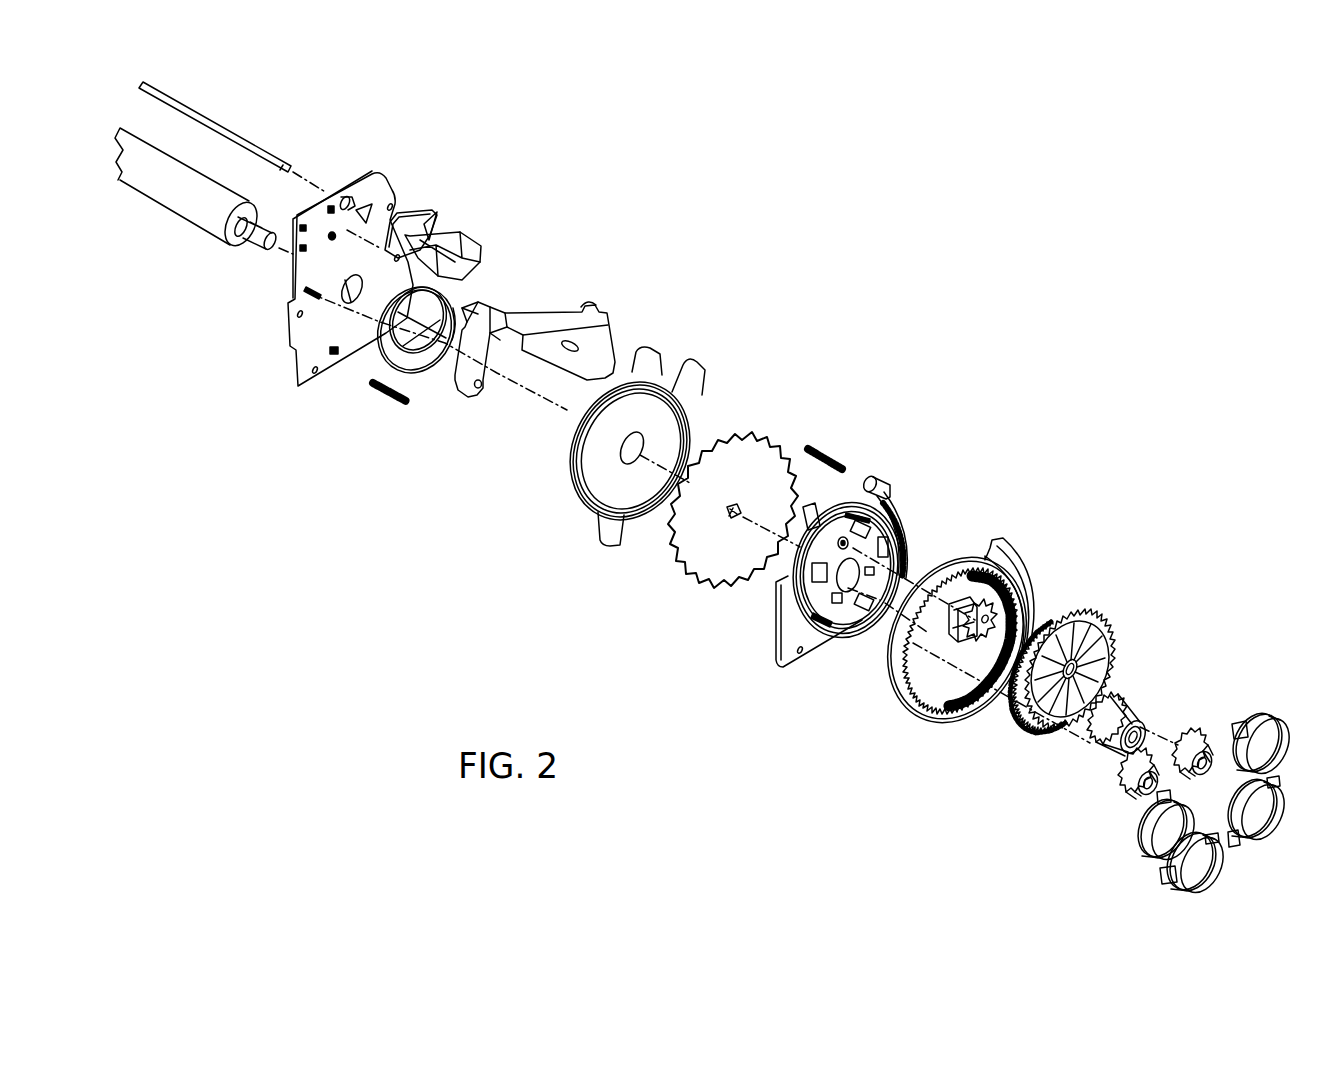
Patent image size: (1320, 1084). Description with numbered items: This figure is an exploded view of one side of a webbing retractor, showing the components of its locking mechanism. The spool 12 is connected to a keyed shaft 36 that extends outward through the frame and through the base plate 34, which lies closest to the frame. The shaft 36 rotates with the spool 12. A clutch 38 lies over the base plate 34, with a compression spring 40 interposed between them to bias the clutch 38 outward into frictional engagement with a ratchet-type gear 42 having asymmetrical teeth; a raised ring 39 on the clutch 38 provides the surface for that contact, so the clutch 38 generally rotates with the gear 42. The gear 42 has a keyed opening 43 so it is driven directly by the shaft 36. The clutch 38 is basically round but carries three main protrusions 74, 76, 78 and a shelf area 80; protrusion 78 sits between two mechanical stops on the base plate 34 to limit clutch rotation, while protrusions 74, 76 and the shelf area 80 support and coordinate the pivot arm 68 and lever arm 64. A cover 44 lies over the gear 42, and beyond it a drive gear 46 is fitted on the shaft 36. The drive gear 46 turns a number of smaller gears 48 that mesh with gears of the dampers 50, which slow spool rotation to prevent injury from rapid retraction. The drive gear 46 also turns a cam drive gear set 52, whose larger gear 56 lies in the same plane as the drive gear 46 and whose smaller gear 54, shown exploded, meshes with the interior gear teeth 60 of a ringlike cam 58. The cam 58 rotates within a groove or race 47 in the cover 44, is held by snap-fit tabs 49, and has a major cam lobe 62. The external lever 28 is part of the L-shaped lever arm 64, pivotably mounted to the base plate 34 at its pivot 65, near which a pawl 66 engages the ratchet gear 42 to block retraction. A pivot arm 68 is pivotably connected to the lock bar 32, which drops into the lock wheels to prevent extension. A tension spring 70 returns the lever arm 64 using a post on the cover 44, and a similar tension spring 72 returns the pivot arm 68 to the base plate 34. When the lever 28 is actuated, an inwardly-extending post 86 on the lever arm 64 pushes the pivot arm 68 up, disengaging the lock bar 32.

The spool 12 is at (165, 204).
The external lever 28 is at (547, 347).
The lock bar 32 is at (222, 126).
The base plate 34 is at (305, 347).
The keyed shaft 36 is at (251, 246).
The clutch 38 is at (612, 451).
The raised ring 39 is at (632, 450).
The compression spring 40 is at (427, 375).
The ratchet-type gear 42 is at (748, 428).
The keyed opening 43 is at (732, 520).
The cover 44 is at (790, 618).
The drive gear 46 is at (1120, 710).
The groove or race 47 is at (818, 525).
The smaller gears 48 is at (1198, 735).
The snap-fit tabs 49 is at (850, 525).
The dampers 50 is at (1270, 727).
The cam drive gear set 52 is at (1096, 667).
The smaller gear 54 is at (965, 608).
The larger gear 56 is at (1105, 668).
The cam 58 is at (957, 608).
The interior gear teeth 60 is at (913, 650).
The major cam lobe 62 is at (1022, 568).
The lever arm 64 is at (461, 310).
The pivot 65 is at (486, 398).
The pawl 66 is at (516, 356).
The pivot arm 68 is at (465, 235).
The tension spring 70 is at (388, 404).
The tension spring 72 is at (815, 443).
The protrusion 74 is at (660, 357).
The protrusion 76 is at (693, 368).
The protrusion 78 is at (616, 548).
The shelf area 80 is at (583, 402).
The inwardly-extending post 86 is at (588, 304).